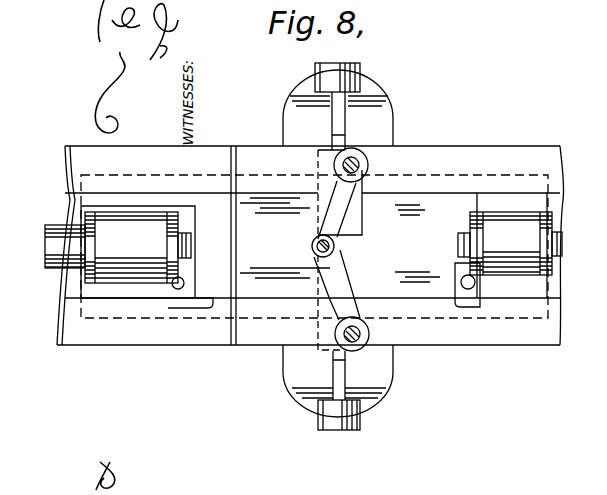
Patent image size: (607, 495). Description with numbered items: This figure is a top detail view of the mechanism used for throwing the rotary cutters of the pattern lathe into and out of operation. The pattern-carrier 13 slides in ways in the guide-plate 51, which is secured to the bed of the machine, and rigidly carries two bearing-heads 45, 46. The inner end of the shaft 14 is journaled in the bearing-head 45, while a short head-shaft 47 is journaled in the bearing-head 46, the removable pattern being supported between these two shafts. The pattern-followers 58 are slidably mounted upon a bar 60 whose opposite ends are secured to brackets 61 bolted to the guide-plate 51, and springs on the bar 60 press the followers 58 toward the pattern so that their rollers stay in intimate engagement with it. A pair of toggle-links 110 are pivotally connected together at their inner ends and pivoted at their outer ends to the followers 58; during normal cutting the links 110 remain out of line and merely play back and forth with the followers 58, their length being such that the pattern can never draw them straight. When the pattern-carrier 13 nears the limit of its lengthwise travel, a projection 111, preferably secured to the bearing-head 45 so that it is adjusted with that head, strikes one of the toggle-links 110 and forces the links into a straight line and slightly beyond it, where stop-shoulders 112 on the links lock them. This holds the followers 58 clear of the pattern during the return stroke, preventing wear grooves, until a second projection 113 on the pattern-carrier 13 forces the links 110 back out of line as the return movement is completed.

The pattern-carrier 13 is at (376, 250).
The shaft 14 is at (56, 268).
The bearing-head 45 is at (138, 252).
The bearing-head 46 is at (505, 245).
The head-shaft 47 is at (556, 245).
The guide-plate 51 is at (485, 147).
The pattern-followers 58 is at (380, 179).
The bar 60 is at (340, 118).
The brackets 61 is at (362, 80).
The toggle-links 110 is at (345, 207).
The projection 111 is at (183, 310).
The stop-shoulders 112 is at (311, 249).
The projection 113 is at (472, 306).